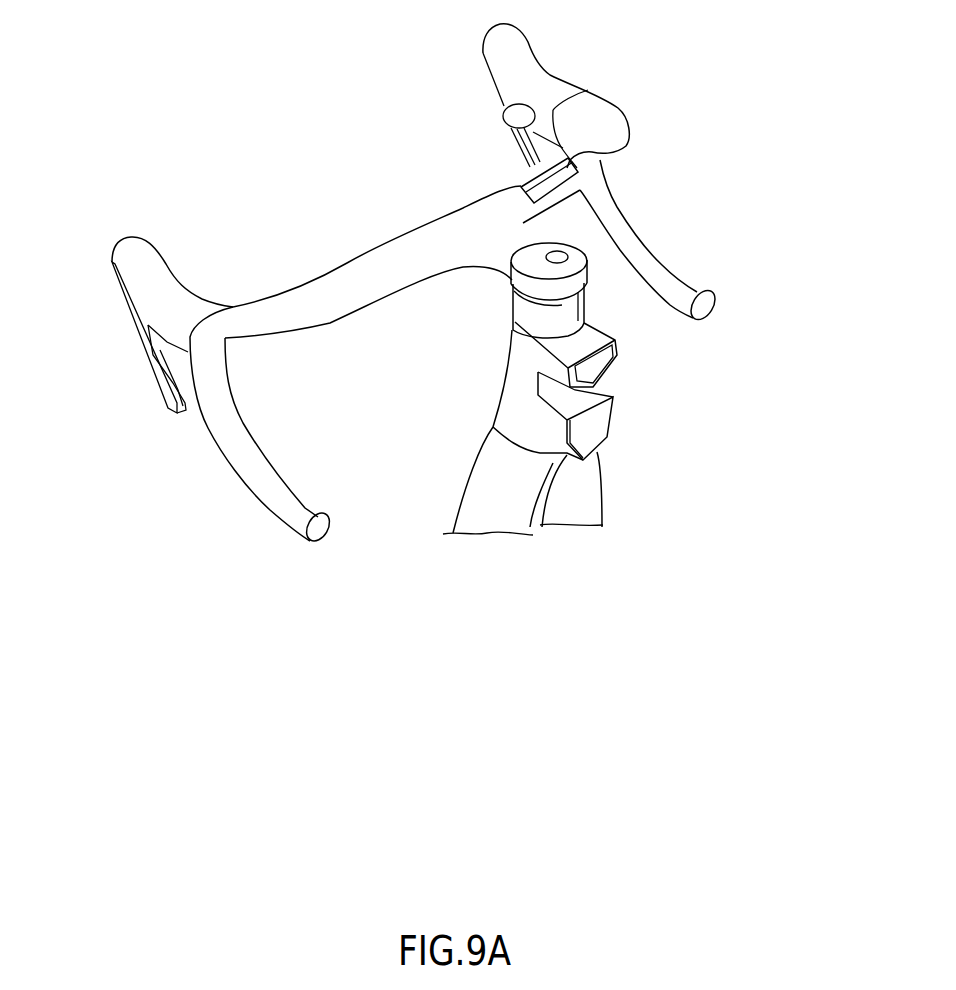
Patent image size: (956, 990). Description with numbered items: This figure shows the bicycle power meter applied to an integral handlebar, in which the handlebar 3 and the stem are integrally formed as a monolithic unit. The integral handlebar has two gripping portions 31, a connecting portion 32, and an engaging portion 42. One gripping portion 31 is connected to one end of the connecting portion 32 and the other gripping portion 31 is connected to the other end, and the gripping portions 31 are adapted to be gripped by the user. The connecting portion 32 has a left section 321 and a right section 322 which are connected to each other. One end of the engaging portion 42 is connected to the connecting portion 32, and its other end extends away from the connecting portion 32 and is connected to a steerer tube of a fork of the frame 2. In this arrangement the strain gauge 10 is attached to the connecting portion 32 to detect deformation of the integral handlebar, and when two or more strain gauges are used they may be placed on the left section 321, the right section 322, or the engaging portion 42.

The handlebar 3 is at (308, 291).
The gripping portion 31 is at (240, 458).
The connecting portion 32 is at (372, 72).
The left section 321 is at (362, 294).
The right section 322 is at (514, 198).
The strain gauge 10 is at (586, 163).
The engaging portion 42 is at (482, 253).
The frame 2 is at (602, 440).